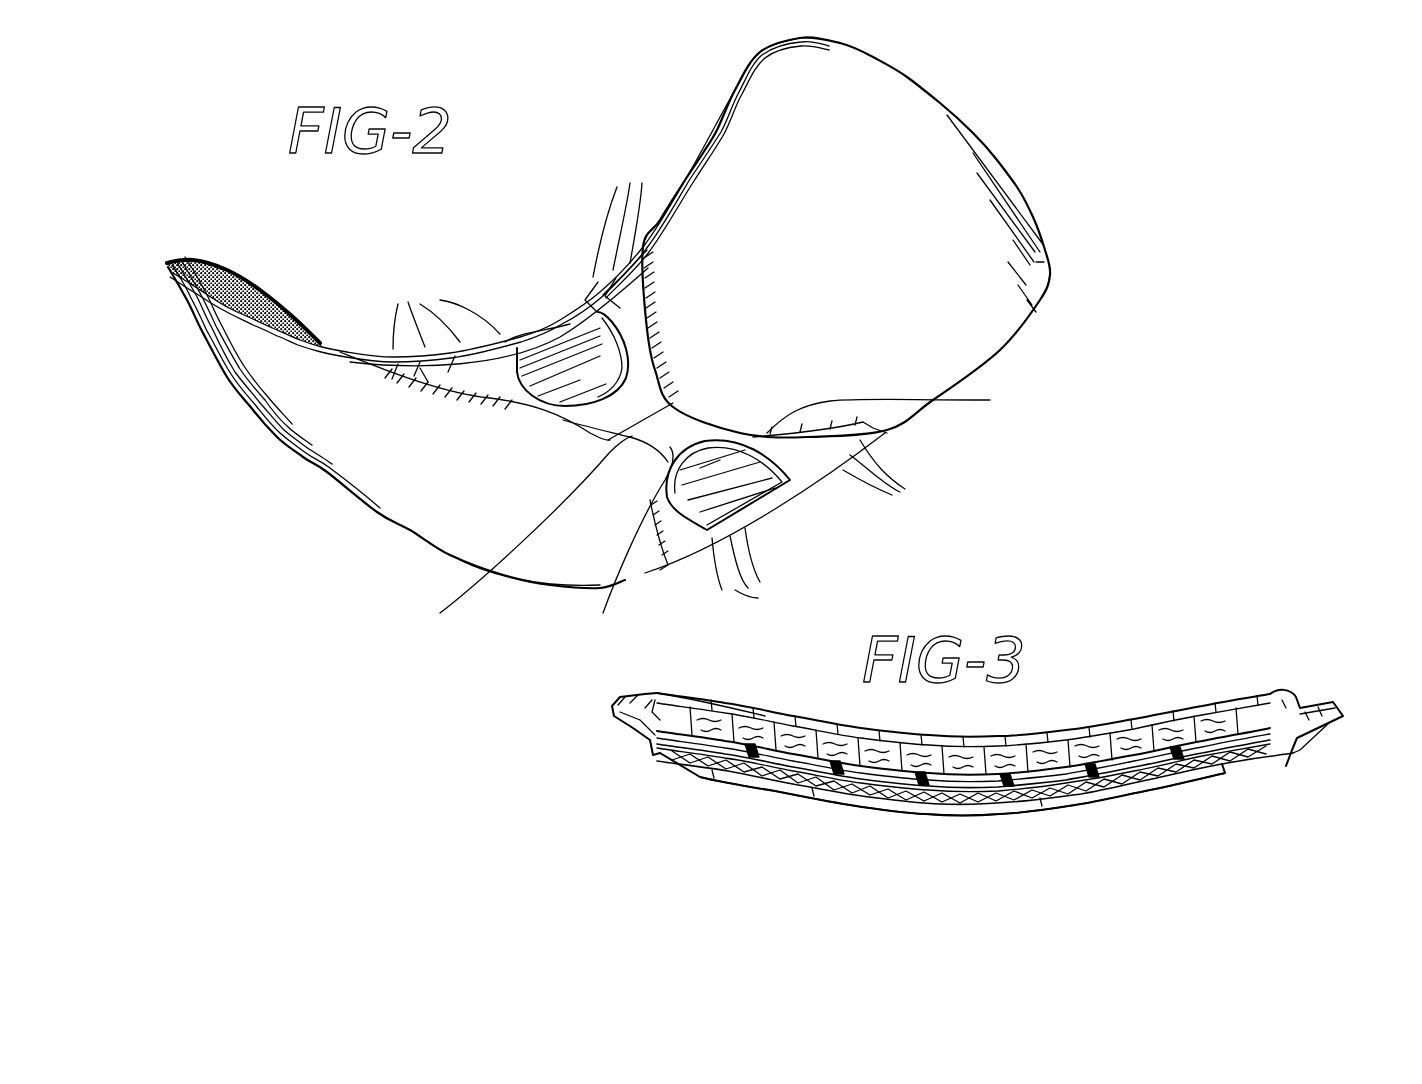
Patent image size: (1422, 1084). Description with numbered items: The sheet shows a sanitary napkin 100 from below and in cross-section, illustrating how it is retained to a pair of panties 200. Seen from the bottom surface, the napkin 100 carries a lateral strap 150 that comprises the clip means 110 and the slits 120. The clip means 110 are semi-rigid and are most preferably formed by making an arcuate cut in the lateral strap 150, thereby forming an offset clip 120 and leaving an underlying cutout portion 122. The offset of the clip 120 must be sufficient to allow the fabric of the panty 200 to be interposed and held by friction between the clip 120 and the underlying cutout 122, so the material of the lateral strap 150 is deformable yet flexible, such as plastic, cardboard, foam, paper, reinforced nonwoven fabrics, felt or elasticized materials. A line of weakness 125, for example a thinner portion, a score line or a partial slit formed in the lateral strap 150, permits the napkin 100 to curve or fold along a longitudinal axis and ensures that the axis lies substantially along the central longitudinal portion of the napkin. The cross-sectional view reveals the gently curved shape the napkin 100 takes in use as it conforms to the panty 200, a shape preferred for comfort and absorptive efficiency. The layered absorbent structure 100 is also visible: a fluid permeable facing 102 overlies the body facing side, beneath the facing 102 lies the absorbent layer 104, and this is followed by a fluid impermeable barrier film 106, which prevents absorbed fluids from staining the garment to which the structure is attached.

In FIG. 2, the sanitary napkin 100 is at (1028, 191).
In FIG. 3, the sanitary napkin 100 is at (1298, 678).
In FIG. 2, the fluid permeable facing 102 is at (268, 293).
In FIG. 3, the fluid permeable facing 102 is at (765, 716).
In FIG. 3, the absorbent layer 104 is at (1130, 748).
In FIG. 2, the fluid impermeable barrier film 106 is at (1044, 264).
In FIG. 3, the fluid impermeable barrier film 106 is at (938, 757).
In FIG. 2, the clip means 110 is at (563, 391).
In FIG. 3, the clip means 110 is at (722, 787).
In FIG. 2, the offset clip 120 is at (908, 494).
In FIG. 2, the underlying cutout portion 122 is at (598, 312).
In FIG. 3, the underlying cutout portion 122 is at (1284, 767).
In FIG. 2, the line of weakness 125 is at (532, 533).
In FIG. 3, the line of weakness 125 is at (952, 812).
In FIG. 2, the lateral strap 150 is at (896, 411).
In FIG. 3, the lateral strap 150 is at (852, 797).
In FIG. 3, the panties 200 is at (1020, 814).